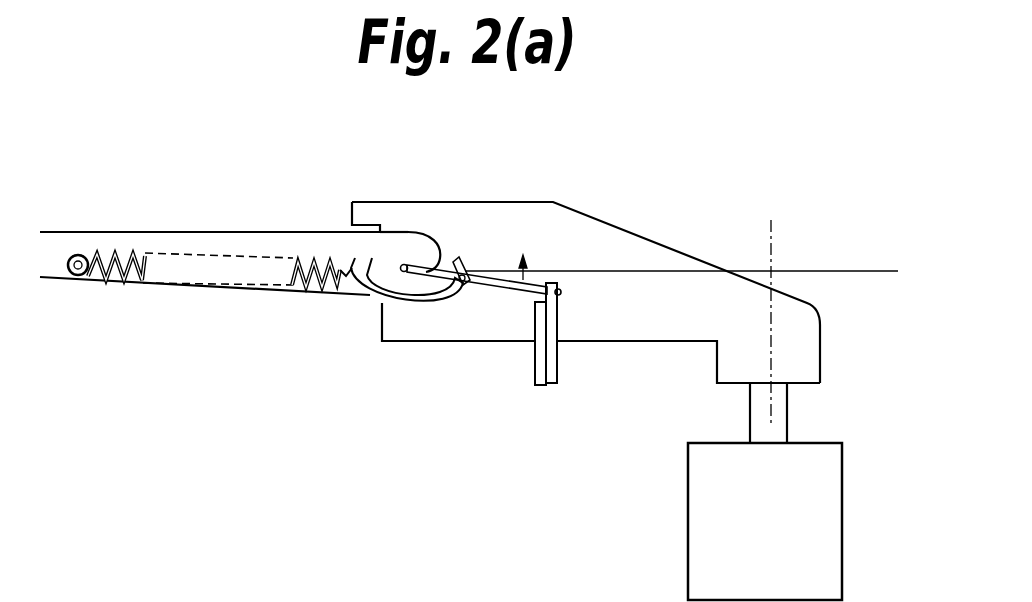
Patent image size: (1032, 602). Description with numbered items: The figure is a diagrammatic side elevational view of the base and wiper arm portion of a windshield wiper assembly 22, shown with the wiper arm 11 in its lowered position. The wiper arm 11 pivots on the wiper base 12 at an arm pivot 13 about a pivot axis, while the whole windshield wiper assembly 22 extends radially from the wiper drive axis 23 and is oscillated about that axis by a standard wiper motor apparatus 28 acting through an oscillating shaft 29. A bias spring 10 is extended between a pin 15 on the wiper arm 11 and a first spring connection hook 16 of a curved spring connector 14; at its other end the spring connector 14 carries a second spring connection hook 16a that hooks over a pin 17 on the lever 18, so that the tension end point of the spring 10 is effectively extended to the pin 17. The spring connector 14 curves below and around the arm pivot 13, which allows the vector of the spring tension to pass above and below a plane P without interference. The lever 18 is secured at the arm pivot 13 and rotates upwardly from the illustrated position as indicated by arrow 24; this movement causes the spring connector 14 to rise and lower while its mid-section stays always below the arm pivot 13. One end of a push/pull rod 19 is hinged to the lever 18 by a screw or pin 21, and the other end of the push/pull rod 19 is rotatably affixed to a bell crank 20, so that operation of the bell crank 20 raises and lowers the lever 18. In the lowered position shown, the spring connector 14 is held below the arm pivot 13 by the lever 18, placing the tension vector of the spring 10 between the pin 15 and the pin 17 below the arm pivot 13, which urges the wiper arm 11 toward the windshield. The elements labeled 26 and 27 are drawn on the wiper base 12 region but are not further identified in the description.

The windshield wiper assembly 22 is at (68, 191).
The wiper arm 11 is at (160, 232).
The guide surface 27 is at (362, 231).
The stopper block 26 is at (365, 212).
The wiper base 12 is at (480, 200).
The curved spring connector 14 is at (408, 308).
The arm pivot 13 is at (409, 262).
The first spring connection hook 16 is at (368, 298).
The lever 18 is at (482, 270).
The pin 17 is at (450, 260).
The second spring connection hook 16a is at (463, 290).
The screw or pin 21 is at (562, 292).
The arrow 24 is at (524, 255).
The wiper drive axis 23 is at (771, 271).
The plane P is at (862, 270).
The push/pull rod 19 is at (558, 372).
The bell crank 20 is at (535, 372).
The oscillating shaft 29 is at (788, 420).
The wiper motor apparatus 28 is at (843, 512).
The pin 15 is at (93, 282).
The bias spring 10 is at (143, 283).